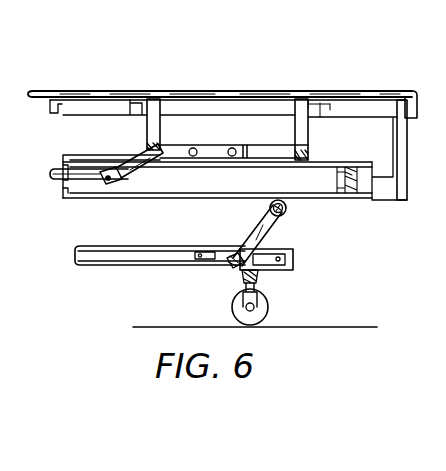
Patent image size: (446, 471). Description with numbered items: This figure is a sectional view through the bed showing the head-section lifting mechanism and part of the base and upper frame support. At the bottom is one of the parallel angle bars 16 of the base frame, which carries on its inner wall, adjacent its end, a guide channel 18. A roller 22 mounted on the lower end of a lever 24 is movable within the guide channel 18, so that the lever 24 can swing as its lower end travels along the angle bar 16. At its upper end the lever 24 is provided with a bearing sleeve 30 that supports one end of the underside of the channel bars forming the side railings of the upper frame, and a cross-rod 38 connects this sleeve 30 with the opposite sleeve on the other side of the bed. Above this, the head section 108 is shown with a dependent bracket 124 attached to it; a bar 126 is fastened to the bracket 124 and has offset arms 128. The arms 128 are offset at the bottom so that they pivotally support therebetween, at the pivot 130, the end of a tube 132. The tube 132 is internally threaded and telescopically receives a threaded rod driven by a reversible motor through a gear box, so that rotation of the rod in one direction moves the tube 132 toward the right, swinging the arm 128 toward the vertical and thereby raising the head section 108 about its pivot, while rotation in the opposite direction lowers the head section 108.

The angle bar 16 is at (146, 263).
The guide channel 18 is at (276, 249).
The roller 22 is at (237, 250).
The lever 24 is at (258, 224).
The bearing sleeve 30 is at (288, 209).
The cross-rod 38 is at (277, 200).
The head section 108 is at (225, 91).
The dependent bracket 124 is at (301, 104).
The bar 126 is at (214, 146).
The offset arm 128 is at (152, 161).
The pivot 130 is at (121, 184).
The tube 132 is at (86, 182).